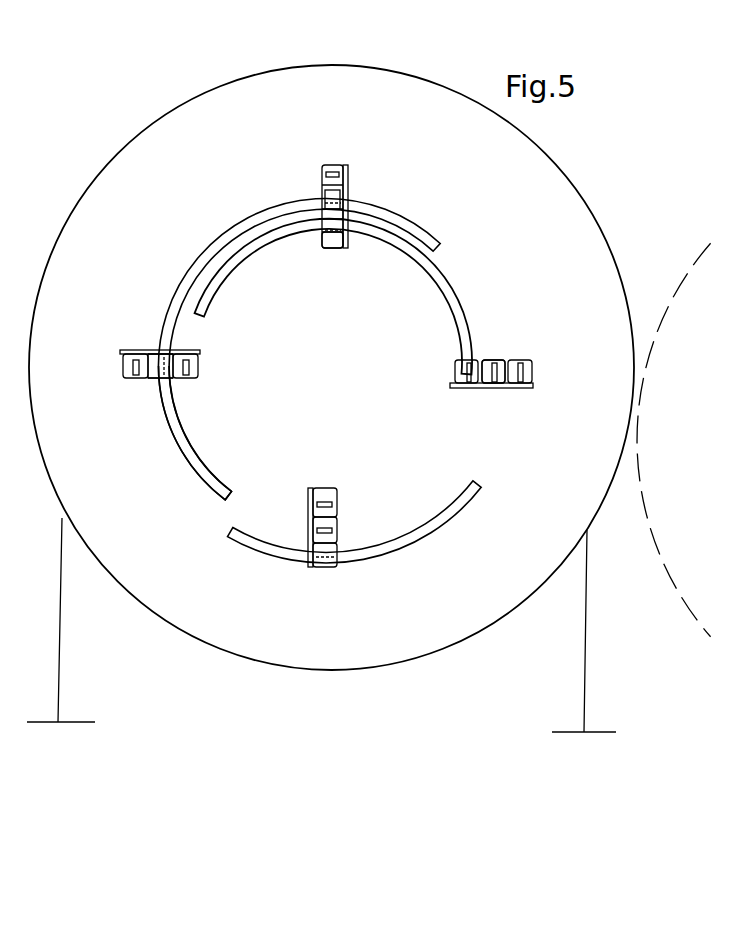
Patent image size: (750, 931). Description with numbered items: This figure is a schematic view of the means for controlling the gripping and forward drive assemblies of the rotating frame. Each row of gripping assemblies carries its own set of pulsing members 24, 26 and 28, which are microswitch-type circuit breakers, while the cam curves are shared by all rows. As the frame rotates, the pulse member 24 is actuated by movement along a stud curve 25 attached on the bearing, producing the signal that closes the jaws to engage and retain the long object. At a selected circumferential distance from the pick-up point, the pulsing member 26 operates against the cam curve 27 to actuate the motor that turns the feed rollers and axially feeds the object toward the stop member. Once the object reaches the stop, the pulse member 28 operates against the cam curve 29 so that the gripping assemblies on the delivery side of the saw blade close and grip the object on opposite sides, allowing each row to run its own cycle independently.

The pulse member 24 is at (335, 165).
The stud curve 25 is at (260, 547).
The pulsing member 26 is at (347, 198).
The cam curve 27 is at (192, 448).
The pulse member 28 is at (332, 247).
The cam curve 29 is at (452, 300).